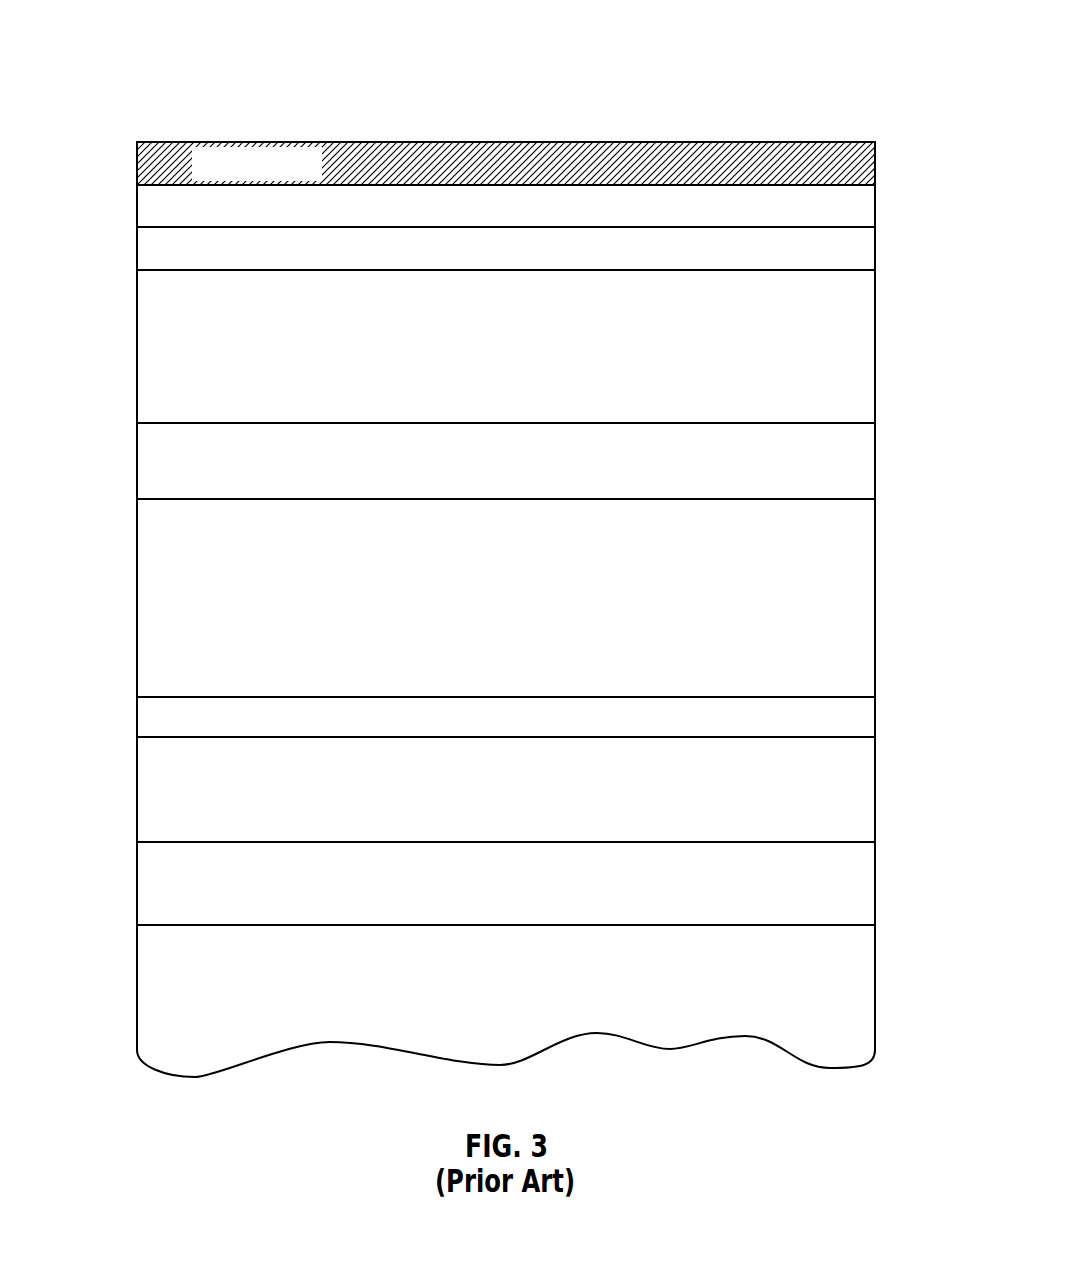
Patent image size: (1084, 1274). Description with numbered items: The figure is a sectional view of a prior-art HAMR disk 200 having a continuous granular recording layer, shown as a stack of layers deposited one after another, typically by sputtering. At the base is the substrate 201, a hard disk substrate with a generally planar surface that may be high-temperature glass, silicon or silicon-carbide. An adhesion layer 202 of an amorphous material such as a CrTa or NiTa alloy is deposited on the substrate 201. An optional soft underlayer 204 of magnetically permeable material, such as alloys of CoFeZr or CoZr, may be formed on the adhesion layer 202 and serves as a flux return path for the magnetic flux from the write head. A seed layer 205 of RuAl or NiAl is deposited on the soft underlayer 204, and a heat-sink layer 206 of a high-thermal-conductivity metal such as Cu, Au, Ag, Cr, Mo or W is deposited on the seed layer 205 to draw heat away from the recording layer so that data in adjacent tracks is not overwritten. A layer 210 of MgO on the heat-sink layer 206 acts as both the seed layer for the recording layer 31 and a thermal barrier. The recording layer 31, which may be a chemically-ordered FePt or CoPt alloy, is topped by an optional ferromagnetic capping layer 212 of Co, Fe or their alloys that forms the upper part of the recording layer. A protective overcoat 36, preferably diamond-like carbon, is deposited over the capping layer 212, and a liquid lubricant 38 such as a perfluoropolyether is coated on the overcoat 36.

The HAMR disk 200 is at (845, 42).
The liquid lubricant 38 is at (137, 165).
The protective overcoat 36 is at (137, 207).
The ferromagnetic capping layer 212 is at (137, 249).
The recording layer 31 is at (137, 344).
The MgO layer 210 is at (137, 463).
The heat-sink layer 206 is at (137, 598).
The seed layer 205 is at (137, 718).
The soft underlayer 204 is at (137, 788).
The adhesion layer 202 is at (137, 882).
The substrate 201 is at (137, 988).